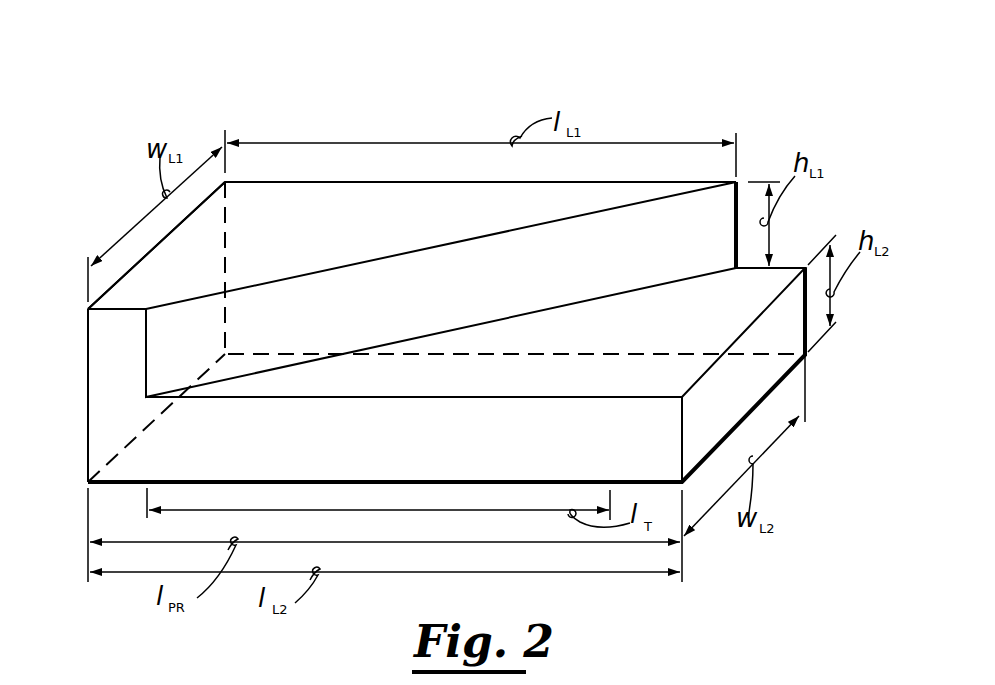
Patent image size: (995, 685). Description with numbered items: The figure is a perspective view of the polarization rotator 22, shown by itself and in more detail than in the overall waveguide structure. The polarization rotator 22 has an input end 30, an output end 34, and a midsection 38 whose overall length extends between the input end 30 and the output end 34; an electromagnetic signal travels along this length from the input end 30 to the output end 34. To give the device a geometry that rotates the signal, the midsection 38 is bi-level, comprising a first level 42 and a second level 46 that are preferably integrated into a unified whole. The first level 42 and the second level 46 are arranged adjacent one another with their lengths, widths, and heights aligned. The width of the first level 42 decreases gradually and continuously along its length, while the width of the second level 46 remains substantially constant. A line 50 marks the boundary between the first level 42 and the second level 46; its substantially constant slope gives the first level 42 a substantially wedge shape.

The polarization rotator 22 is at (738, 84).
The input end 30 is at (140, 258).
The output end 34 is at (742, 392).
The midsection 38 is at (118, 486).
The first level 42 is at (607, 193).
The second level 46 is at (782, 272).
The line 50 is at (597, 299).